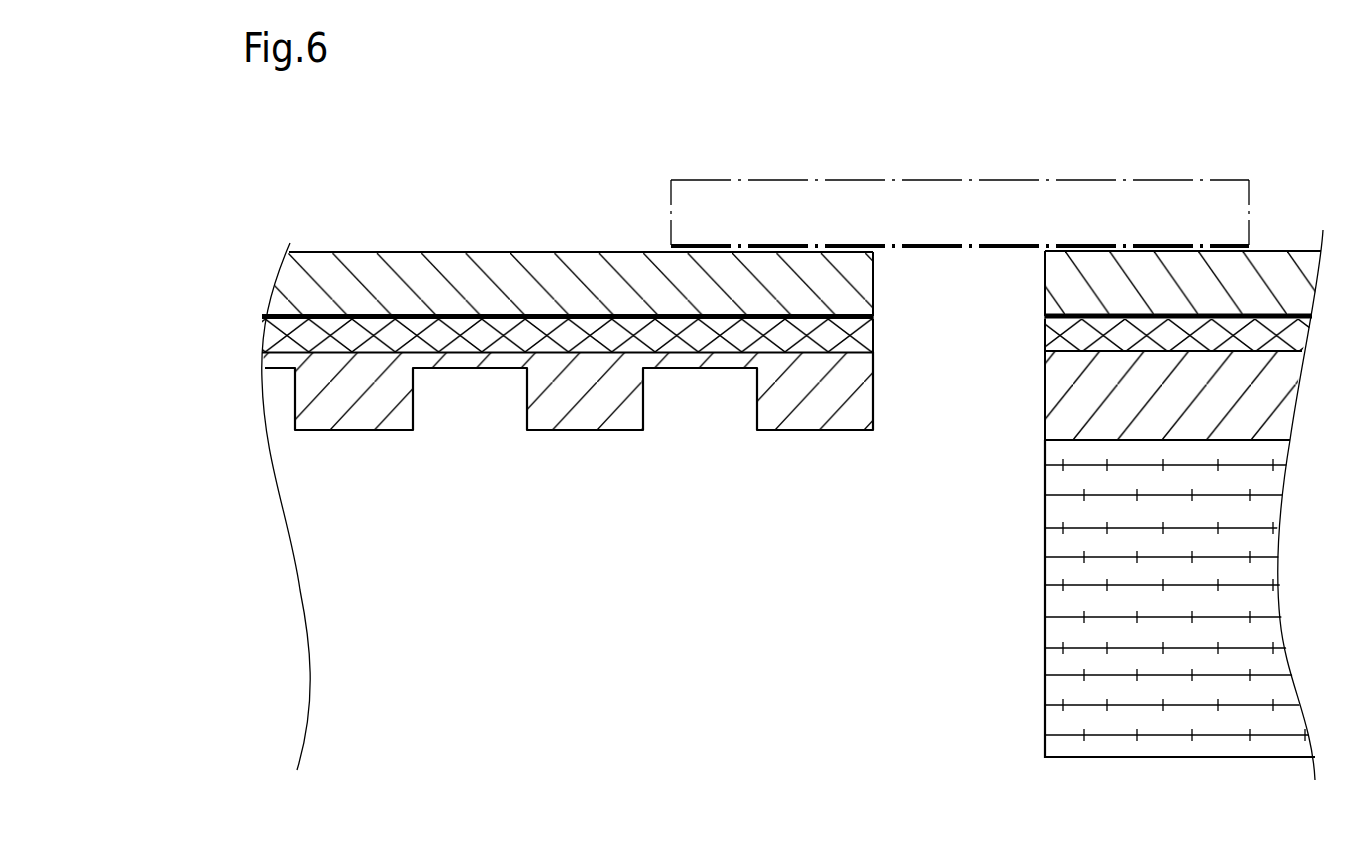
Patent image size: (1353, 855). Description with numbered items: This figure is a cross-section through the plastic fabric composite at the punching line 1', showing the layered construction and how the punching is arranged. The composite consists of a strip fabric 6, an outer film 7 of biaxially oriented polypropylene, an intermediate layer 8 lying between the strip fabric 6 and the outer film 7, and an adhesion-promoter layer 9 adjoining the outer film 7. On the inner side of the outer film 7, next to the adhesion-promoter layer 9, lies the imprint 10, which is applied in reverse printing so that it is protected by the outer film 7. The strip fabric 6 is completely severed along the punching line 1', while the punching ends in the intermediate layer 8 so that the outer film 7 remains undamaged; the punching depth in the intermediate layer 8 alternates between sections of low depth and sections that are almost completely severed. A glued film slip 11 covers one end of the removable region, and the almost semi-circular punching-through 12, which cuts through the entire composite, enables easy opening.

The punching line 1' is at (273, 506).
The strip fabric 6 is at (1257, 603).
The outer film 7 is at (293, 285).
The intermediate layer 8 is at (340, 388).
The adhesion-promoter layer 9 is at (283, 342).
The imprint 10 is at (283, 317).
The film slip 11 is at (1130, 176).
The punching-through 12 is at (957, 300).